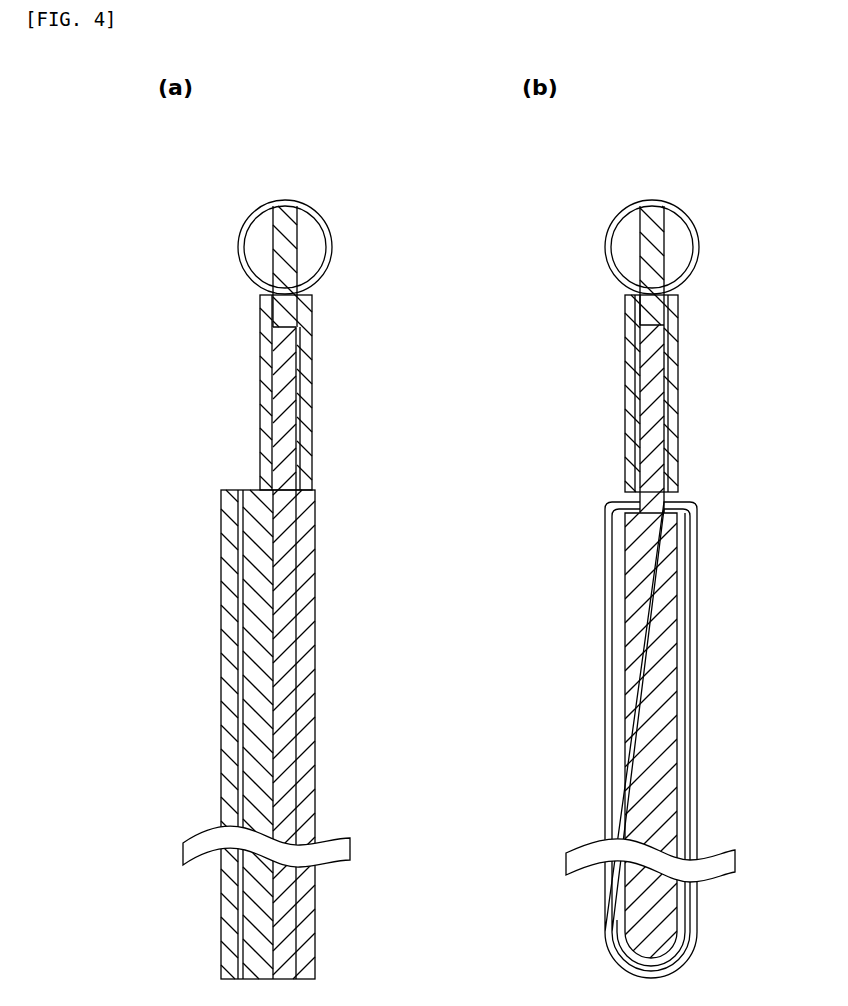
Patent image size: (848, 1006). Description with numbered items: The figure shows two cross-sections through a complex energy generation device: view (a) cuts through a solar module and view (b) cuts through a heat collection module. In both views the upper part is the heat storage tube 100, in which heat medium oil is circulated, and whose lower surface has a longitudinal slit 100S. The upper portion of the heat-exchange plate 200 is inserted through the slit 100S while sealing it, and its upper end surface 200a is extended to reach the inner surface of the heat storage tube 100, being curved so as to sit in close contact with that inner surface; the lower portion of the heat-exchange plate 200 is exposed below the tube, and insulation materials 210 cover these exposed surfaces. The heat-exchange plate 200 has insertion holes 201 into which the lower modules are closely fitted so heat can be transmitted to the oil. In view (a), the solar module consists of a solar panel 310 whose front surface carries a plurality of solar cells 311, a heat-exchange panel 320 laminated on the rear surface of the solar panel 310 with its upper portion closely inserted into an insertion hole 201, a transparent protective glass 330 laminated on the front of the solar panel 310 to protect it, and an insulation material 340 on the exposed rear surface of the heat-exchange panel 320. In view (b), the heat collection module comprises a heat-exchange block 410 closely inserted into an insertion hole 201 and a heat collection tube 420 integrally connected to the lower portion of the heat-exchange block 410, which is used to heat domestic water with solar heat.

The heat storage tube 100 is at (330, 210).
The slit 100S is at (270, 268).
The heat-exchange plate 200 is at (322, 318).
The upper end surface 200a is at (285, 207).
The insertion hole 201 is at (299, 340).
The insulation material 210 is at (262, 353).
The solar panel 310 is at (256, 718).
The solar cell 311 is at (241, 605).
The heat-exchange panel 320 is at (290, 437).
The transparent protective glass 330 is at (226, 535).
The insulation material 340 is at (313, 545).
The heat-exchange block 410 is at (657, 445).
The heat collection tube 420 is at (663, 645).